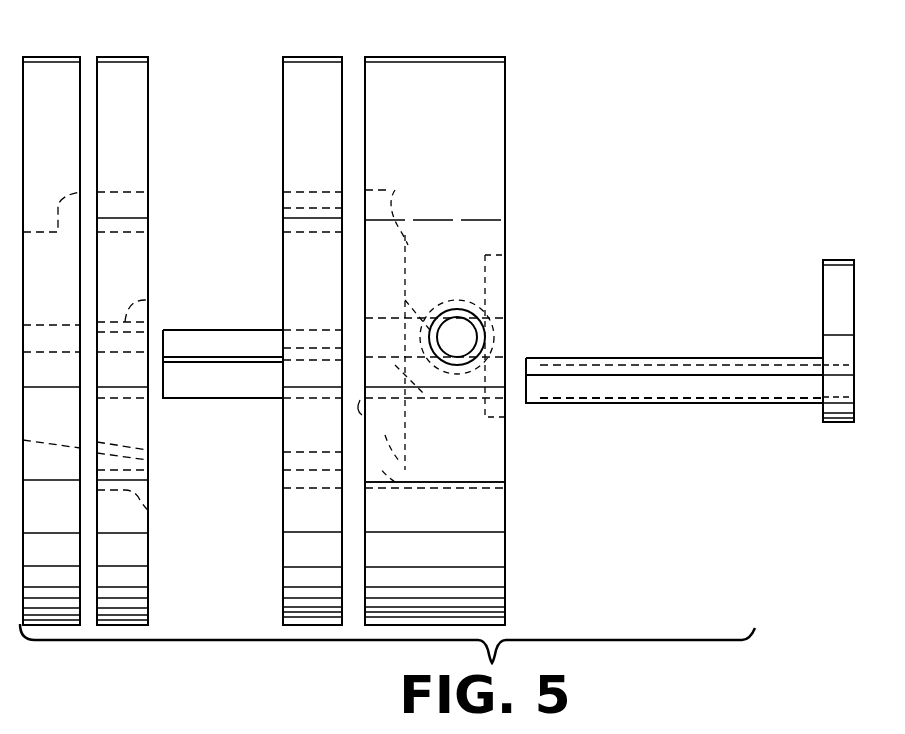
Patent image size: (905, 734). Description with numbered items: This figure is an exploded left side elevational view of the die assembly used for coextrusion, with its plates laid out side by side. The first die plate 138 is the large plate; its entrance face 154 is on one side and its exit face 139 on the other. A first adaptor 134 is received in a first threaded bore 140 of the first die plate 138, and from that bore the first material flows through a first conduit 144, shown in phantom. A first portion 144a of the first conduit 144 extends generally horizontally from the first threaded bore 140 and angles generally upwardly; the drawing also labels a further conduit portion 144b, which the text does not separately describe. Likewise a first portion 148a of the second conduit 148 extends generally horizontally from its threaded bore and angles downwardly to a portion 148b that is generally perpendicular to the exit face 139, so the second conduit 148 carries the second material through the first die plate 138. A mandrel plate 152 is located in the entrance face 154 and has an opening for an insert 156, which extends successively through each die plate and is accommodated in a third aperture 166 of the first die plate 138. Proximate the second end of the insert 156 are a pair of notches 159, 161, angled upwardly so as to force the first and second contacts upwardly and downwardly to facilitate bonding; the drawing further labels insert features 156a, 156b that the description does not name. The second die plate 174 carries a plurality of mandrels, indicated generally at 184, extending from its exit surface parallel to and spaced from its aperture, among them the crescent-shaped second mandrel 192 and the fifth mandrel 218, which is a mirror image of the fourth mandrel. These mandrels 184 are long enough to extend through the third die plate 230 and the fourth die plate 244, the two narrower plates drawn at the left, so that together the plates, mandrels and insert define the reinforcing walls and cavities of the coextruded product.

The fourth die plate 244 is at (53, 65).
The third die plate 230 is at (130, 68).
The second die plate 174 is at (309, 70).
The entrance face 154 is at (505, 88).
The mandrels 184 is at (208, 322).
The fifth mandrel 218 is at (256, 338).
The second mandrel 192 is at (242, 386).
The passage branch 144b is at (392, 190).
The first conduit 144 is at (405, 255).
The first portion of the first conduit 144a is at (410, 305).
The first threaded bore 140 is at (493, 303).
The first adaptor 134 is at (487, 320).
The notch 159 is at (568, 355).
The mandrel plate 152 is at (823, 325).
The first portion of the second conduit 148a is at (420, 400).
The exit face 139 is at (365, 415).
The second conduit 148 is at (402, 462).
The portion of the second conduit 148b is at (403, 488).
The first die plate 138 is at (492, 526).
The third aperture 166 is at (508, 417).
The rod end 156b is at (528, 380).
The notch 161 is at (585, 410).
The insert 156 is at (683, 405).
The rod end 156a is at (808, 408).